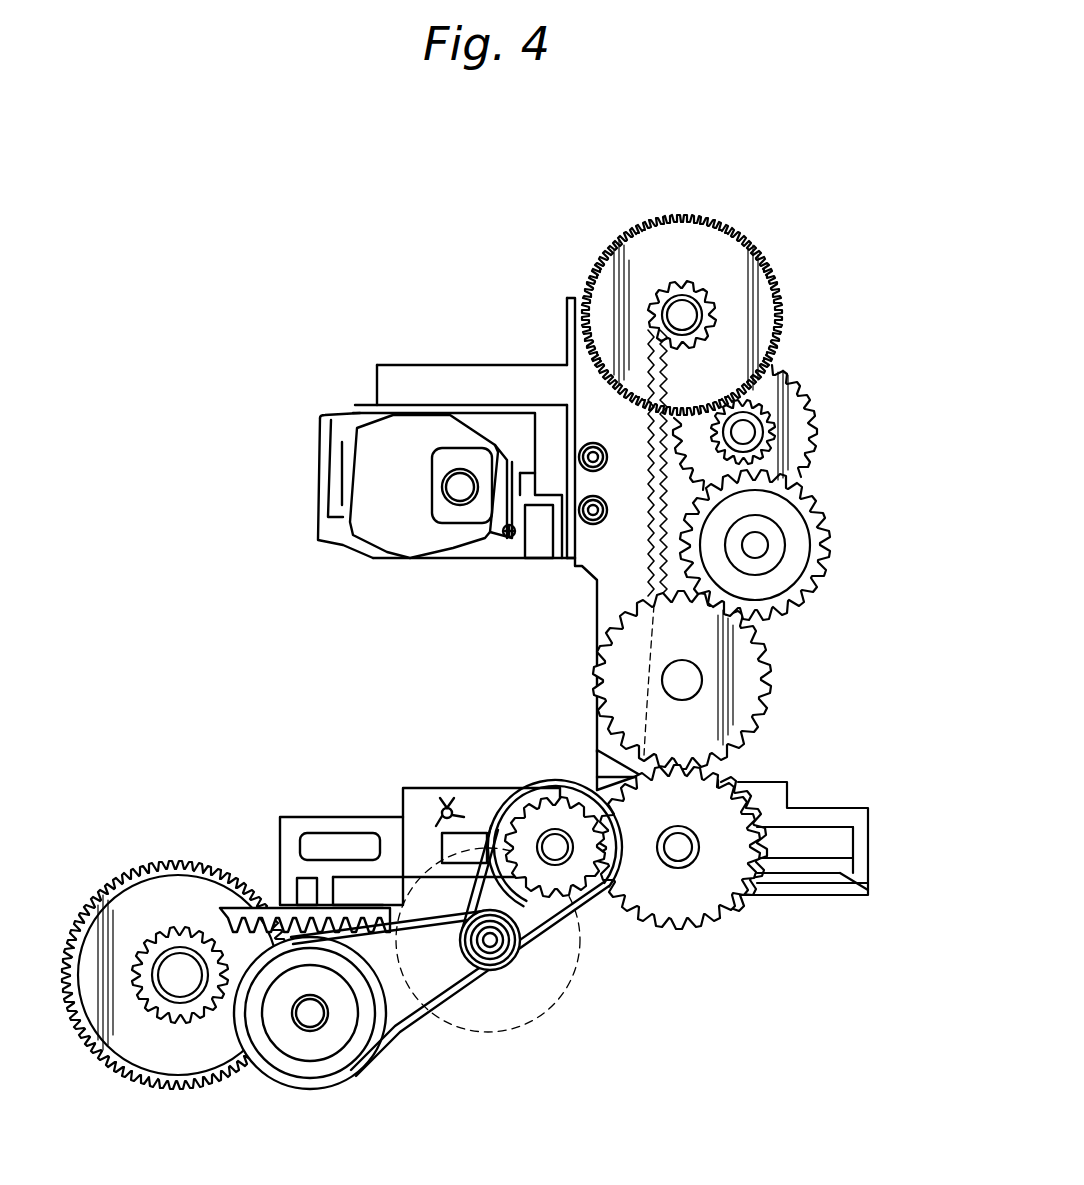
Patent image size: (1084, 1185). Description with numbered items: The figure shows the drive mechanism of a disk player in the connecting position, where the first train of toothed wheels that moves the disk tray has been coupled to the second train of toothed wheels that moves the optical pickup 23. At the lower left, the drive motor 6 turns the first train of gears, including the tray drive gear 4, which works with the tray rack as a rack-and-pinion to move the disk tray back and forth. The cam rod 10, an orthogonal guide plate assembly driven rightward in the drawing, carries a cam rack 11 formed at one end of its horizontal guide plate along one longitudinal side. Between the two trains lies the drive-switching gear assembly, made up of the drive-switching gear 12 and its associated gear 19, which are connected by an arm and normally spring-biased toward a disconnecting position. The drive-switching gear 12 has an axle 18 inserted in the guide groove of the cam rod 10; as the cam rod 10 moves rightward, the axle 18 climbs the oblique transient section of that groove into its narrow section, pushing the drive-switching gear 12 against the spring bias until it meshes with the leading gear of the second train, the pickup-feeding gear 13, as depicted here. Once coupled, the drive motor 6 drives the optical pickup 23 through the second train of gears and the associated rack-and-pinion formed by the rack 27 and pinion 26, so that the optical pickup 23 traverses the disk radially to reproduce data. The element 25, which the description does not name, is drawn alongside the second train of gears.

The tray drive gear 4 is at (180, 1020).
The drive motor 6 is at (524, 1000).
The cam rod 10 is at (406, 780).
The cam rack 11 is at (208, 905).
The drive-switching gear 12 is at (695, 900).
The pickup-feeding gear 13 is at (770, 672).
The axle 18 is at (705, 848).
The associated gear 19 is at (546, 808).
The optical pickup 23 is at (412, 428).
The gear train 25 is at (836, 469).
The pinion 26 is at (703, 290).
The rack 27 is at (568, 333).